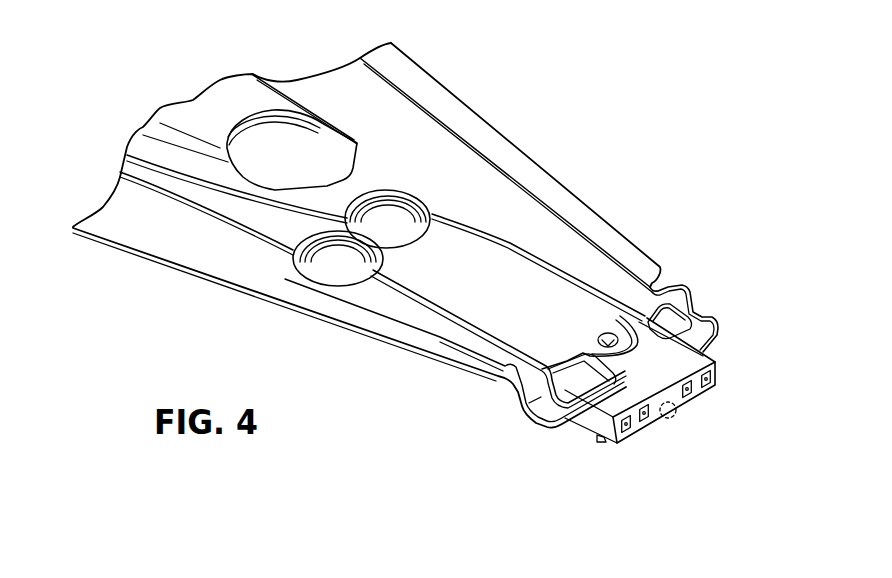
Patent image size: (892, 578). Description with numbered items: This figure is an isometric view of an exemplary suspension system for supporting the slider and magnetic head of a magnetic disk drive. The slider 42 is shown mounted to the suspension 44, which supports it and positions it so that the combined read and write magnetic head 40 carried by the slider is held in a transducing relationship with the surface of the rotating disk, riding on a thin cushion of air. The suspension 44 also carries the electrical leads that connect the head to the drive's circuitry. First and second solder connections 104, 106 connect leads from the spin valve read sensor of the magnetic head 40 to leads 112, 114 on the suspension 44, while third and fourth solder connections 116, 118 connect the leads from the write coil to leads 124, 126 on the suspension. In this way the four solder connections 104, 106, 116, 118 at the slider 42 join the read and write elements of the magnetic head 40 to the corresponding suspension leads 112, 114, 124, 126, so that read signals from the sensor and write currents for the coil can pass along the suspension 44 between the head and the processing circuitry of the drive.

The magnetic head 40 is at (682, 422).
The slider 42 is at (571, 432).
The suspension 44 is at (531, 155).
The first solder connection 104 is at (612, 440).
The second solder connection 106 is at (712, 380).
The lead 112 is at (408, 293).
The lead 114 is at (583, 282).
The third solder connection 116 is at (643, 422).
The fourth solder connection 118 is at (690, 394).
The lead 124 is at (455, 313).
The lead 126 is at (505, 248).